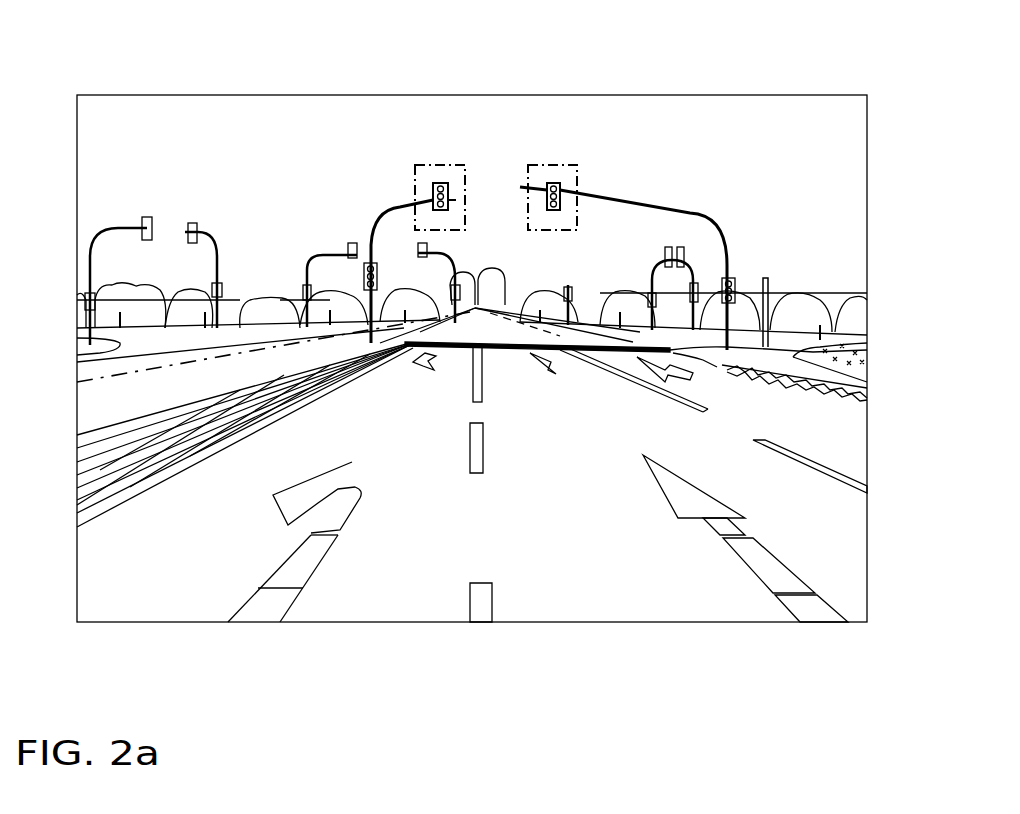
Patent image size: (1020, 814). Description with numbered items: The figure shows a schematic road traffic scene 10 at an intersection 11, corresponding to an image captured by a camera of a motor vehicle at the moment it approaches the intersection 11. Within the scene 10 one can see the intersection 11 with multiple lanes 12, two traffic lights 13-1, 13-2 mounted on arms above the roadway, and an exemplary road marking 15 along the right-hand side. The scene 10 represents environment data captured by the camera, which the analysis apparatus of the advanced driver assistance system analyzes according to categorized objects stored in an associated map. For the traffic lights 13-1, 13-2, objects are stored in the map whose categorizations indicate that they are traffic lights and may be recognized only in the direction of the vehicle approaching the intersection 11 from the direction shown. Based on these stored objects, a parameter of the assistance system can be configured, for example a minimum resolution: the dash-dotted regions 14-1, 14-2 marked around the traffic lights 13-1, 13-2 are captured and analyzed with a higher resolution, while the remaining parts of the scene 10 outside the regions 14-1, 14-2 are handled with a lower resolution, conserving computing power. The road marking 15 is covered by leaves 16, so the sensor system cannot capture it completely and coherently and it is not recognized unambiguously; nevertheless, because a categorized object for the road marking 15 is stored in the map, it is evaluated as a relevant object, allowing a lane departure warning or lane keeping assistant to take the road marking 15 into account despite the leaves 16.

The road traffic scene 10 is at (112, 76).
The intersection 11 is at (586, 320).
The lanes 12 is at (376, 593).
The traffic light 13-1 is at (442, 189).
The traffic light 13-2 is at (560, 189).
The region 14-1 is at (425, 166).
The region 14-2 is at (542, 166).
The road marking 15 is at (717, 368).
The leaves 16 is at (848, 380).